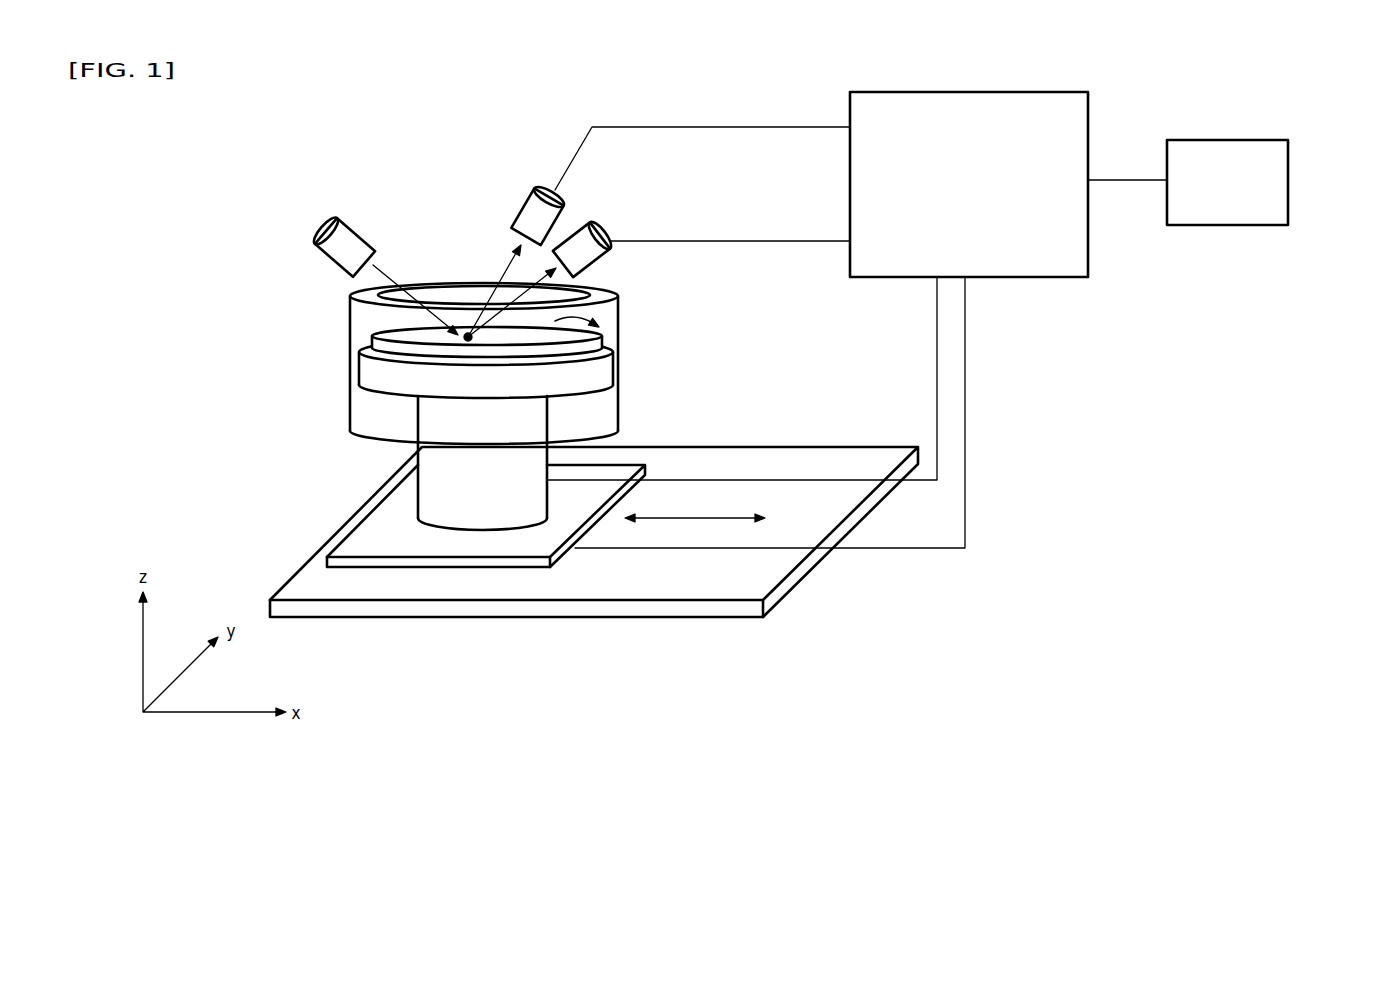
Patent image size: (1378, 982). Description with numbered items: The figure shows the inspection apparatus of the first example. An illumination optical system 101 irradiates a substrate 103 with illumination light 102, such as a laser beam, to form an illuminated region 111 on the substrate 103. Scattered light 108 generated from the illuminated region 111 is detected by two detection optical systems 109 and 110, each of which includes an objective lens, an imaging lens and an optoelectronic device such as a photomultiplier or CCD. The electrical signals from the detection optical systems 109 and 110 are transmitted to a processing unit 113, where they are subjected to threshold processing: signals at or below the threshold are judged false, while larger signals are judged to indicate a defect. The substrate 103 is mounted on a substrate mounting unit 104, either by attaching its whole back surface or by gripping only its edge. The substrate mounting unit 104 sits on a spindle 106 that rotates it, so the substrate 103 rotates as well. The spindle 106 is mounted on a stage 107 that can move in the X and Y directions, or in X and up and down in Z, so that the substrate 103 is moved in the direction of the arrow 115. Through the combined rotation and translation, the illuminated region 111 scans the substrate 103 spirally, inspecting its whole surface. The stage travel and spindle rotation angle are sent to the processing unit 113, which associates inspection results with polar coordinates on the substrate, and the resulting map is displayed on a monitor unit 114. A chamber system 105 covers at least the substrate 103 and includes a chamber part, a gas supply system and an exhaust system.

The illumination optical system 101 is at (337, 242).
The illumination light 102 is at (395, 283).
The substrate 103 is at (371, 346).
The substrate mounting unit 104 is at (357, 375).
The chamber system 105 is at (350, 427).
The spindle 106 is at (427, 484).
The stage 107 is at (360, 545).
The scattered light 108 is at (494, 288).
The detection optical system 109 is at (530, 218).
The detection optical system 110 is at (590, 252).
The illuminated region 111 is at (550, 347).
The processing unit 113 is at (1043, 258).
The monitor unit 114 is at (1247, 188).
The arrow 115 is at (745, 511).